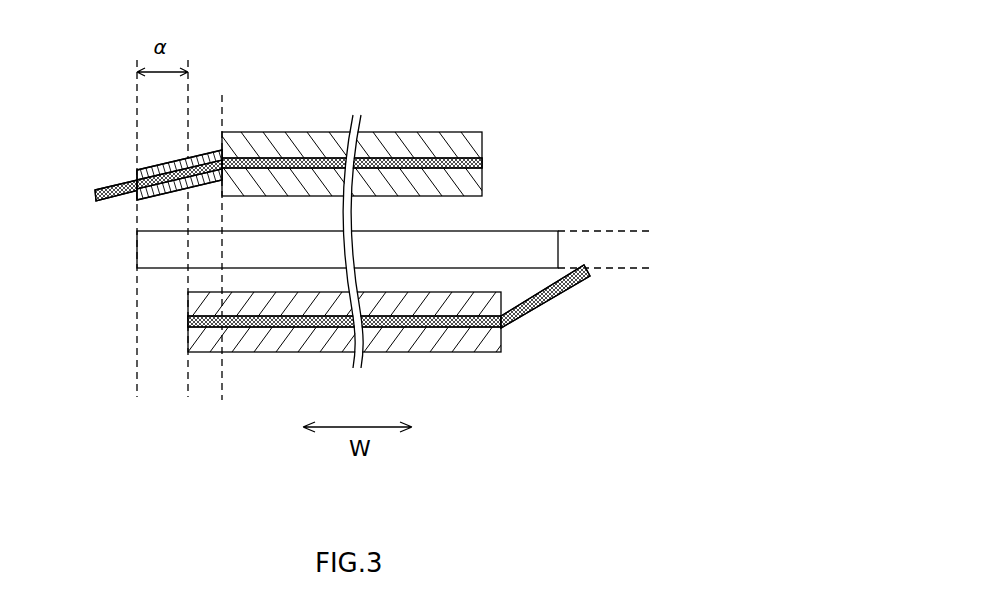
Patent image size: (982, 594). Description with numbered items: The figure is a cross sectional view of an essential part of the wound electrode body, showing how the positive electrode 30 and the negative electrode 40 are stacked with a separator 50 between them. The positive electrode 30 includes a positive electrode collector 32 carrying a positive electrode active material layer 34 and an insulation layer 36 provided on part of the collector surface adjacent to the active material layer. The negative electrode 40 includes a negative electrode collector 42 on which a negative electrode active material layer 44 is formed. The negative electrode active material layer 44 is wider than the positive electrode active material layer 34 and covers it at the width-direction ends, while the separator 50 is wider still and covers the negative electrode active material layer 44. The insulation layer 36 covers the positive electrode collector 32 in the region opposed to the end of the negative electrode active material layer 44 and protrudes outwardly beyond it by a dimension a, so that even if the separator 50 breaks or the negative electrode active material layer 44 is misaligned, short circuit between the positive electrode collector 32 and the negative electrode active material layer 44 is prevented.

The positive electrode 30 is at (303, 119).
The positive electrode collector 32 is at (108, 185).
The positive electrode active material layer 34 is at (478, 177).
The insulation layer 36 is at (170, 190).
The negative electrode 40 is at (352, 345).
The negative electrode collector 42 is at (562, 297).
The negative electrode active material layer 44 is at (195, 343).
The separator 50 is at (137, 248).